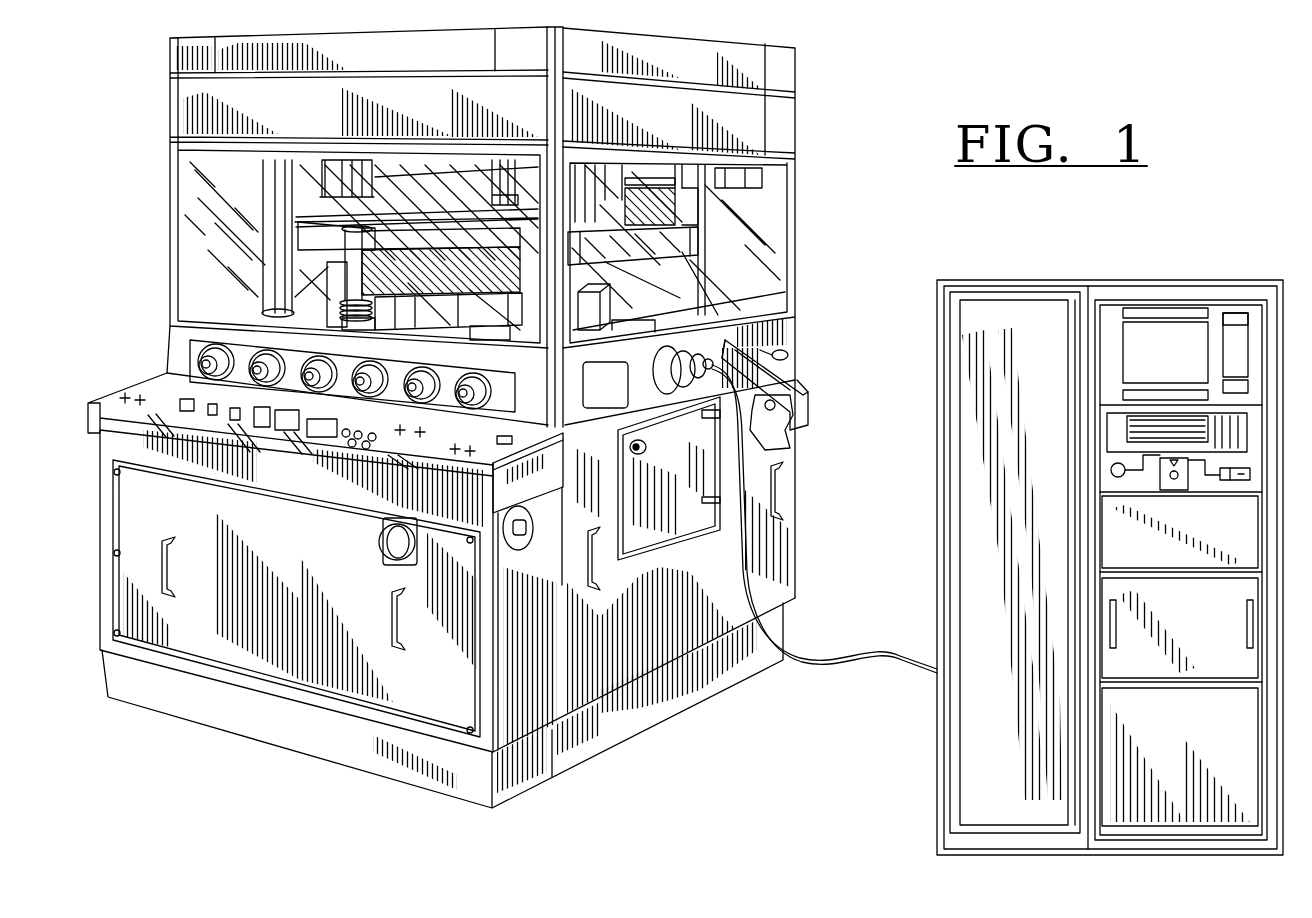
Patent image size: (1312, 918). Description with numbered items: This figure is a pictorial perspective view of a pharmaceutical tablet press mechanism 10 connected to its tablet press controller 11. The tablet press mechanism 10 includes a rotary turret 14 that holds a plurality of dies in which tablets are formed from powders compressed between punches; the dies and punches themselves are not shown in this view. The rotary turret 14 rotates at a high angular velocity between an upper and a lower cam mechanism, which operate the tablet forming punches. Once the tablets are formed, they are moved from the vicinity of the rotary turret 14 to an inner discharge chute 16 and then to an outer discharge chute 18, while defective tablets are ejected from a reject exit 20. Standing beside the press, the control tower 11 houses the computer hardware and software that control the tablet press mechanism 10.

The tablet press mechanism 10 is at (812, 110).
The tablet press controller 11 is at (1128, 256).
The rotary turret 14 is at (678, 252).
The inner discharge chute 16 is at (698, 303).
The outer discharge chute 18 is at (803, 385).
The reject exit 20 is at (775, 447).